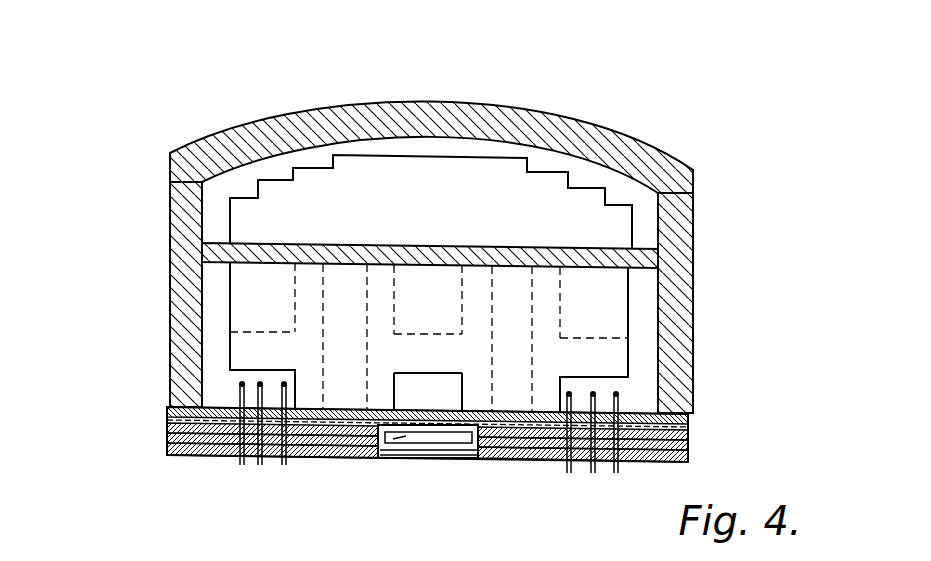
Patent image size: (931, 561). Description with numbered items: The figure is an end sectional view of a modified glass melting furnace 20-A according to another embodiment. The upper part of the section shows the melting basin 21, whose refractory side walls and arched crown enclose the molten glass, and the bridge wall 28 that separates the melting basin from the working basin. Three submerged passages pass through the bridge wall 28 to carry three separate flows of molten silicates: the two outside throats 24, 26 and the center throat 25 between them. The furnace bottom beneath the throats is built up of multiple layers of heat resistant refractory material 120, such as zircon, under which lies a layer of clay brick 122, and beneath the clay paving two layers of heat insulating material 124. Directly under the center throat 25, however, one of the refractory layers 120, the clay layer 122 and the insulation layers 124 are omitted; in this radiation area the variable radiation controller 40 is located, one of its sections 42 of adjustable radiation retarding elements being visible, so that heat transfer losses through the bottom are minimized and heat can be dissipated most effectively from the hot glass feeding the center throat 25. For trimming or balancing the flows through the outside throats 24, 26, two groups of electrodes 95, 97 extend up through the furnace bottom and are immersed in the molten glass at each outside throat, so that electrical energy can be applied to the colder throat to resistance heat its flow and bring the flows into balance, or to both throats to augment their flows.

The modified glass melting furnace 20-A is at (298, 104).
The melting basin 21 is at (208, 289).
The bridge wall 28 is at (393, 250).
The outside throat 24 is at (270, 383).
The center throat 25 is at (425, 392).
The outside throat 26 is at (588, 392).
The group of electrodes 95 is at (238, 384).
The group of electrodes 97 is at (619, 396).
The layer of heat resistant refractory material 120 is at (167, 416).
The layer of clay brick 122 is at (312, 457).
The layer of heat insulating material 124 is at (167, 446).
The section of adjustable radiation retarding elements 42 is at (388, 459).
The variable radiation controller 40 is at (437, 466).